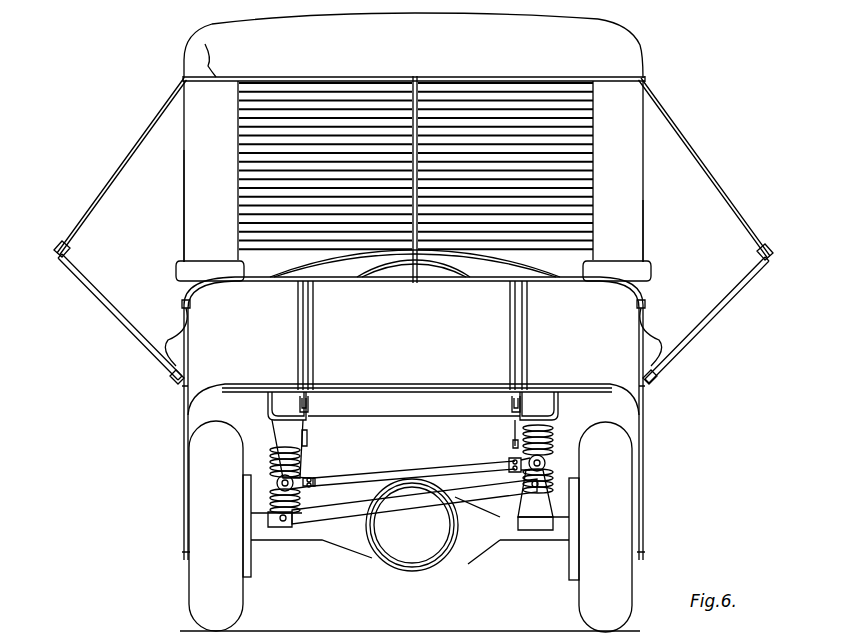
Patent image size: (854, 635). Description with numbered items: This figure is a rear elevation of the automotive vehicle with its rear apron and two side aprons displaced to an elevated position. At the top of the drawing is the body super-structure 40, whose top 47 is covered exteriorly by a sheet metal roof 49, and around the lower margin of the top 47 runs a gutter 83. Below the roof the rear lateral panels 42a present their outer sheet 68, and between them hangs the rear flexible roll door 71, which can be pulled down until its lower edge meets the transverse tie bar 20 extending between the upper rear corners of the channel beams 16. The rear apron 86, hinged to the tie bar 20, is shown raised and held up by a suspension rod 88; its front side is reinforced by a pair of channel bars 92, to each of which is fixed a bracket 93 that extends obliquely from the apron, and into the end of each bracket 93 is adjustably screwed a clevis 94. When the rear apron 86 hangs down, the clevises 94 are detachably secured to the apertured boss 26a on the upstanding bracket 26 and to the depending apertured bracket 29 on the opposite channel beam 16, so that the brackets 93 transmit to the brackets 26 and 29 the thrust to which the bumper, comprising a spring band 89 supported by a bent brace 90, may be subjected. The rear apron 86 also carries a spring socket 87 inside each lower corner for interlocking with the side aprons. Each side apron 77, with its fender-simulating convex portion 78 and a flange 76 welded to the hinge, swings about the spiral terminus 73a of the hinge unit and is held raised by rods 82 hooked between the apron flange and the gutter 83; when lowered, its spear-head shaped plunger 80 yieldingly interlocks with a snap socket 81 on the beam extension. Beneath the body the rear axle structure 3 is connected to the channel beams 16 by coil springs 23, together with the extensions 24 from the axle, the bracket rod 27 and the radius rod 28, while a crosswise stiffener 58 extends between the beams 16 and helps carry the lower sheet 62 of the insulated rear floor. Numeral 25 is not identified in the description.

The rear axle structure 3 is at (366, 548).
The channel beam 16 is at (266, 404).
The transverse tie bar 20 is at (388, 392).
The coil springs 23 is at (300, 462).
The extensions 24 is at (278, 530).
The right hanger 25 is at (522, 500).
The upstanding bracket 26 is at (282, 438).
The apertured boss 26a is at (310, 438).
The bracket rod 27 is at (348, 504).
The radius rod 28 is at (392, 468).
The depending apertured bracket 29 is at (512, 438).
The super-structure of the composite body 40 is at (180, 168).
The rear lateral panels 42a is at (664, 216).
The top 47 is at (336, 320).
The sheet metal roof 49 is at (630, 33).
The crosswise stiffener 58 is at (438, 416).
The lower sheet 62 is at (360, 392).
The outer sheet 68 is at (184, 150).
The rear flexible roll door 71 is at (498, 100).
The spiral terminus 73a is at (678, 380).
The flange 76 is at (182, 388).
The side apron 77 is at (106, 308).
The fender-simulating convex portion 78 is at (166, 336).
The spear-head shaped plunger 80 is at (61, 262).
The snap socket 81 is at (182, 556).
The rods 82 is at (146, 123).
The gutter 83 is at (205, 44).
The rear apron 86 is at (670, 278).
The spring socket 87 is at (178, 300).
The suspension rod 88 is at (412, 106).
The spring band 89 is at (346, 268).
The bent brace 90 is at (438, 270).
The channel bars 92 is at (314, 335).
The bracket 93 is at (302, 328).
The clevis 94 is at (310, 404).